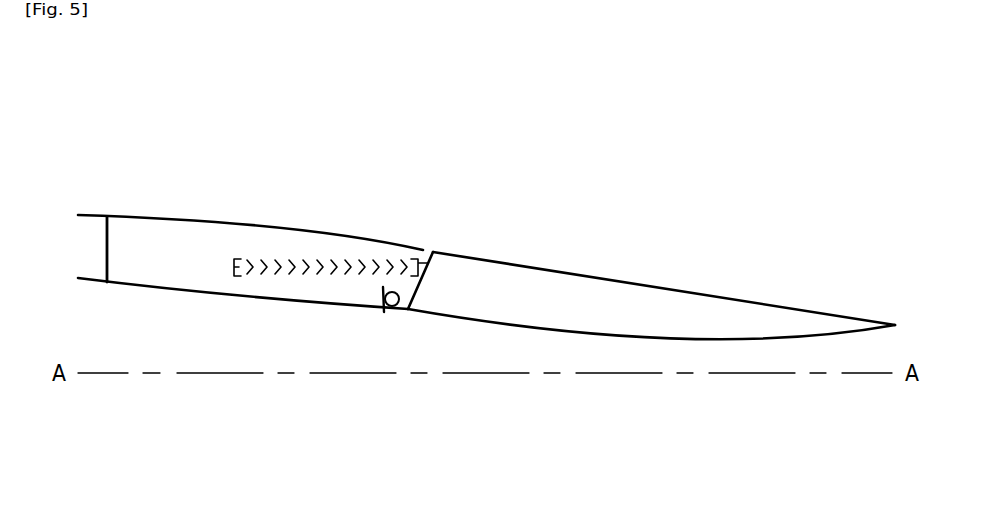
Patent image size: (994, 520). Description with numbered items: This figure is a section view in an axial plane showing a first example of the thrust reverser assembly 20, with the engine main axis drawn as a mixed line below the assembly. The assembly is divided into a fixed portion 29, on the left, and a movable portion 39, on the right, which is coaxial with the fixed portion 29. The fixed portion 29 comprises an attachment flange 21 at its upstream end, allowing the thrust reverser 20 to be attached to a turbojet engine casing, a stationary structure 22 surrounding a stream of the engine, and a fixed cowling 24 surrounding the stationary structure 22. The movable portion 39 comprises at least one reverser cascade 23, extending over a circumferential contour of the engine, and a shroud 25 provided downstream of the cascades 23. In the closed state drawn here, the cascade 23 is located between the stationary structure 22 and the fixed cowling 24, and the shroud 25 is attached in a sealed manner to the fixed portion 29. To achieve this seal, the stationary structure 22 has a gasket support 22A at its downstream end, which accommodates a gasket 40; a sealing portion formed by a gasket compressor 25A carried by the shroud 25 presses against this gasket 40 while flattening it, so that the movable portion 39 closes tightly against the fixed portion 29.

The thrust reverser assembly 20 is at (473, 242).
The attachment flange 21 is at (105, 250).
The stationary structure 22 is at (237, 297).
The gasket support 22A is at (383, 297).
The reverser cascade 23 is at (330, 277).
The fixed cowling 24 is at (293, 229).
The shroud 25 is at (584, 275).
The gasket compressor 25A is at (403, 310).
The fixed portion 29 is at (240, 237).
The movable portion 39 is at (649, 275).
The gasket 40 is at (395, 310).